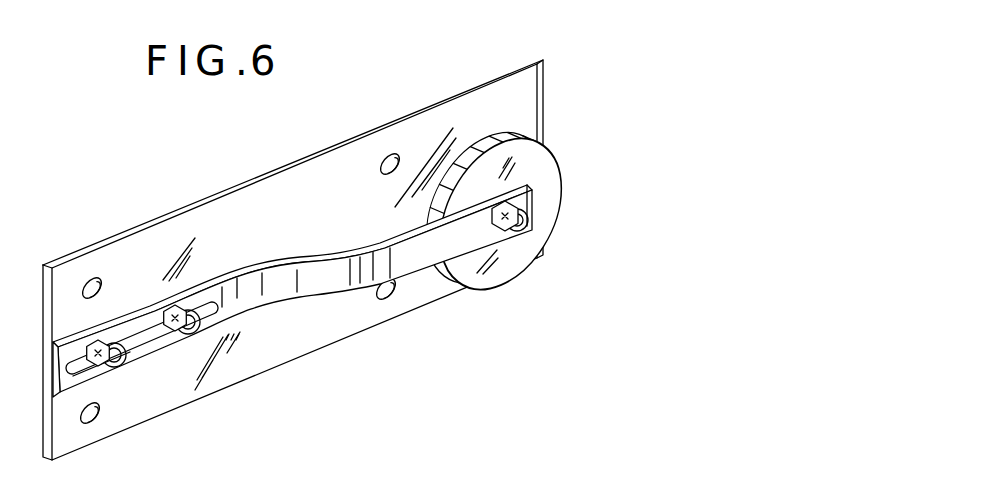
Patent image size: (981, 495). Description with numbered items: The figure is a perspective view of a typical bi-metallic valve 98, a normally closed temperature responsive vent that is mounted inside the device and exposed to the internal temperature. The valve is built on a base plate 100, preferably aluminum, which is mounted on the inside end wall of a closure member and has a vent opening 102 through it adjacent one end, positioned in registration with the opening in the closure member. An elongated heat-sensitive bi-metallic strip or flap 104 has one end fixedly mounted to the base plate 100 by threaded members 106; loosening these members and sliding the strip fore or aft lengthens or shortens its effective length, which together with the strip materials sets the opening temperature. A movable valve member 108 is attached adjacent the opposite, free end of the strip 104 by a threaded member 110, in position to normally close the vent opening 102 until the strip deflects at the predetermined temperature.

The bi-metallic valve 98 is at (383, 252).
The base plate 100 is at (184, 209).
The vent opening 102 is at (477, 150).
The bi-metallic strip 104 is at (343, 288).
The threaded members 106 is at (177, 337).
The movable valve member 108 is at (543, 183).
The threaded member 110 is at (520, 217).